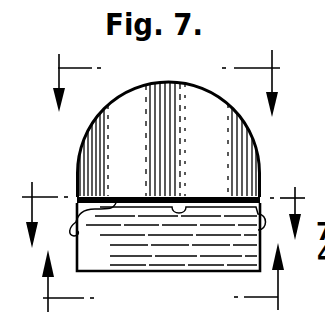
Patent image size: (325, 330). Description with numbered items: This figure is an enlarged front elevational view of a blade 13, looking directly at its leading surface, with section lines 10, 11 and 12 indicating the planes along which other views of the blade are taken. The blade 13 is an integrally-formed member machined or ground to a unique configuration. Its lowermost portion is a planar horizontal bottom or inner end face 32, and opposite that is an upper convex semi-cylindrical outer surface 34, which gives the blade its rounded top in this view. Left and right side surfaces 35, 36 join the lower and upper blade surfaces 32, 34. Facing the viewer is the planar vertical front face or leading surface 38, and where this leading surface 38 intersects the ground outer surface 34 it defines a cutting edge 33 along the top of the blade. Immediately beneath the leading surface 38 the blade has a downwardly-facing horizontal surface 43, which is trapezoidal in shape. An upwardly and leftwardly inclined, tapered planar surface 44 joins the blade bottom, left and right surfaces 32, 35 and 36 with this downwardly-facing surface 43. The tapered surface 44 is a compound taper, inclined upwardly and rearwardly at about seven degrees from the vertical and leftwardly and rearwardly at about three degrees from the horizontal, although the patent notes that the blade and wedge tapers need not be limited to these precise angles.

The section line 10- 10 is at (167, 83).
The section line 11- 11 is at (163, 202).
The section line 12- 12 is at (163, 278).
The blade 13 is at (264, 134).
The bottom or inner end face 32 is at (128, 272).
The cutting edge 33 is at (200, 87).
The outer surface 34 is at (153, 83).
The right side surface 35 is at (220, 197).
The left side surface 36 is at (116, 203).
The front face or leading surface 38 is at (142, 131).
The downwardly-facing horizontal surface 43 is at (182, 197).
The tapered surface 44 is at (105, 264).